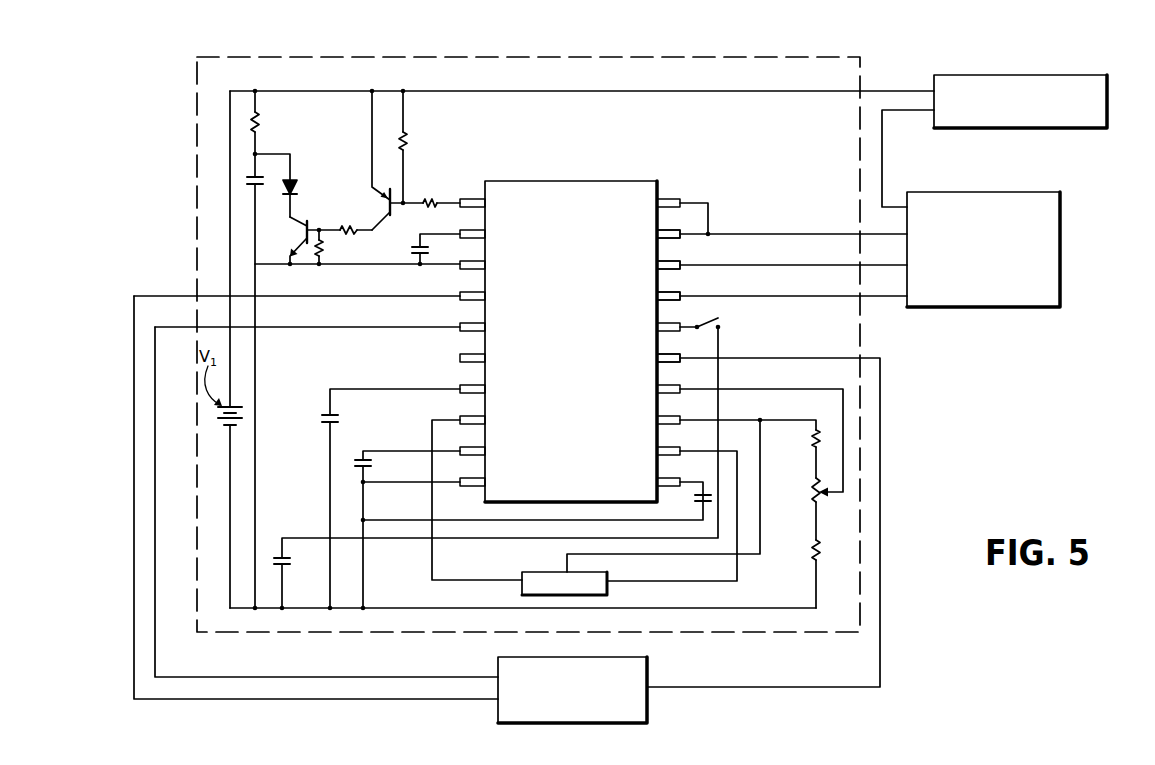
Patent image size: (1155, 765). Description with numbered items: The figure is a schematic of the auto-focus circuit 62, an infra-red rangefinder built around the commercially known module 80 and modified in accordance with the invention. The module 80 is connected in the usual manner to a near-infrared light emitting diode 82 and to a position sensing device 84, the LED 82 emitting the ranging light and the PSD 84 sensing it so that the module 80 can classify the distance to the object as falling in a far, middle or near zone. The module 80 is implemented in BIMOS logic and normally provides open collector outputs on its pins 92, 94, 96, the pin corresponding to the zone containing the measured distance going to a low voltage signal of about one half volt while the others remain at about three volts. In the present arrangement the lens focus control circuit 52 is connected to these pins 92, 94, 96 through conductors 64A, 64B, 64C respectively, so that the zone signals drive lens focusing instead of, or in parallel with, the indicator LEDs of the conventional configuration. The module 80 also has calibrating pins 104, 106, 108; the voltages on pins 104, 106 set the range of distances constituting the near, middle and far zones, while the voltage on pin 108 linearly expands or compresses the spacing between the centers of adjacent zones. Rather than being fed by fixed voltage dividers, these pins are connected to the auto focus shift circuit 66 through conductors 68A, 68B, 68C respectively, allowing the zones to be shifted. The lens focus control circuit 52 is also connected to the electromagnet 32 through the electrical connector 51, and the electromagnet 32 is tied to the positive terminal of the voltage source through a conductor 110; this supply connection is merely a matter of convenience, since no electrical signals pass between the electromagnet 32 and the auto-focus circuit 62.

The electromagnet 32 is at (1019, 78).
The electrical connector 51 is at (883, 150).
The lens focus control circuit 52 is at (1055, 222).
The auto-focus circuit 62 is at (208, 113).
The conductor 64A is at (829, 300).
The conductor 64B is at (790, 272).
The conductor 64C is at (773, 241).
The auto focus shift circuit 66 is at (649, 712).
The conductor 68A is at (355, 699).
The conductor 68B is at (382, 678).
The conductor 68C is at (879, 607).
The module 80 is at (553, 190).
The light emitting diode 82 is at (296, 183).
The position sensing device 84 is at (522, 578).
The pin 92 is at (683, 302).
The pin 94 is at (683, 271).
The pin 96 is at (683, 240).
The pin 104 is at (462, 300).
The pin 106 is at (462, 330).
The pin 108 is at (683, 364).
The conductor 110 is at (735, 88).